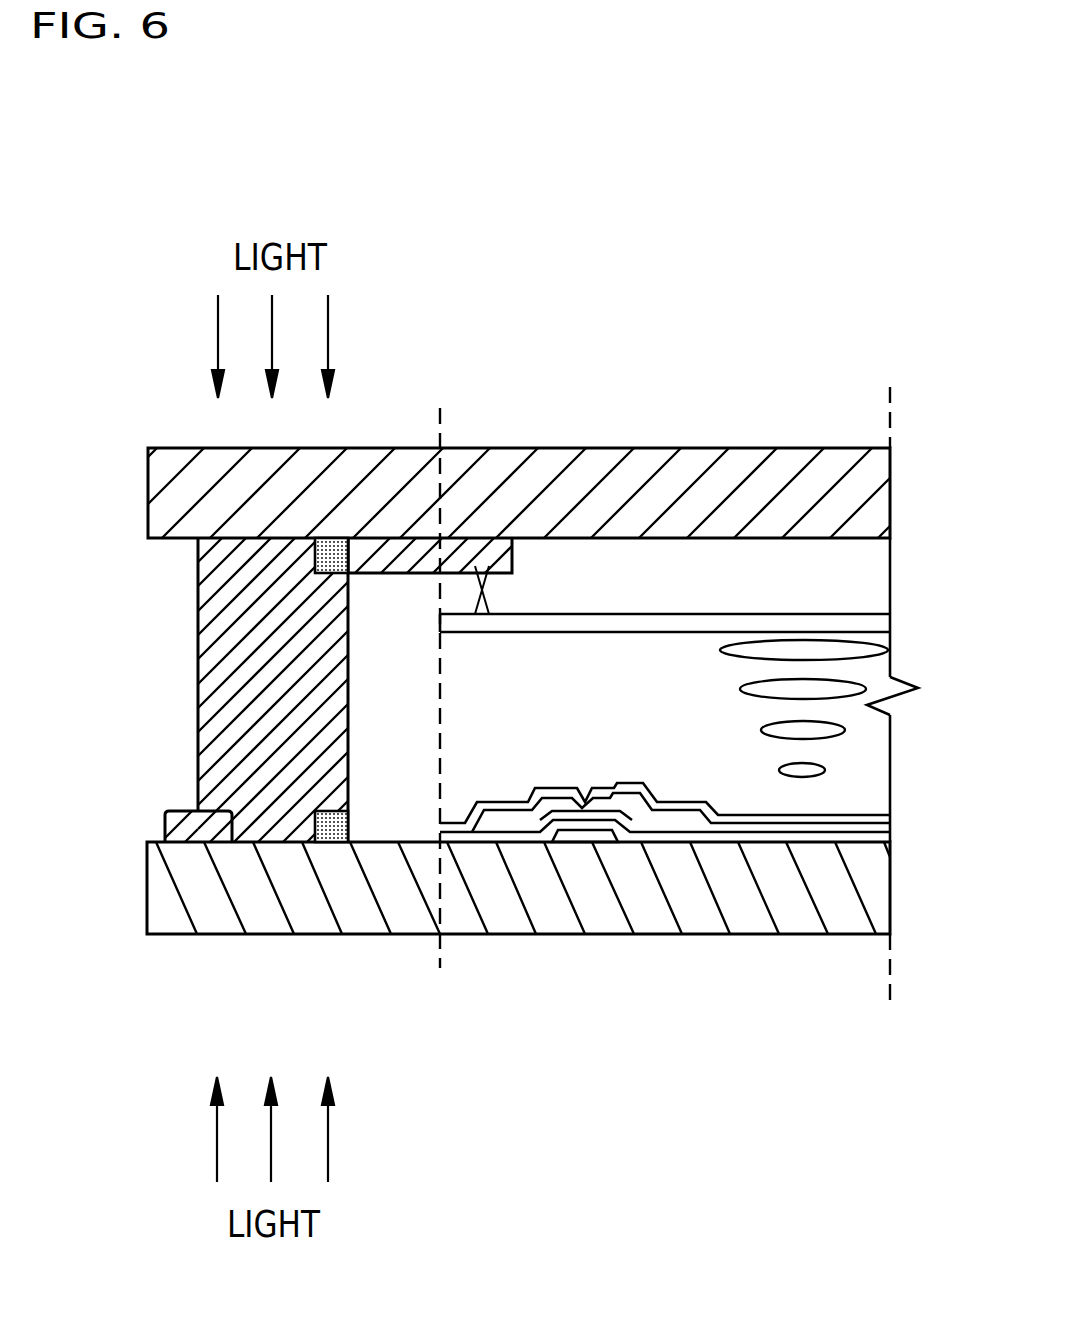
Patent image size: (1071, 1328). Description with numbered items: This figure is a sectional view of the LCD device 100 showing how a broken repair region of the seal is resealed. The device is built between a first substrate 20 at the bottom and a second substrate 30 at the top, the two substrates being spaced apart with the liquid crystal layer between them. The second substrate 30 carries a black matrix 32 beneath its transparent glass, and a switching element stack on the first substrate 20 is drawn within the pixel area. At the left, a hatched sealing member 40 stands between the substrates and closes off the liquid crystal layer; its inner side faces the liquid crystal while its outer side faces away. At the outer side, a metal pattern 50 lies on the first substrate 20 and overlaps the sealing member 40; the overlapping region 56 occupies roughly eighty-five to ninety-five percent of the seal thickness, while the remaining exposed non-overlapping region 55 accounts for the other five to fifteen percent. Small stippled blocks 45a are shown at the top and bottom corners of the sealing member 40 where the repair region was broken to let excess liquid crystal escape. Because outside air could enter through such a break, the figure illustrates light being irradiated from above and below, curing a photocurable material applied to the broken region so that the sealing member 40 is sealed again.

The LCD device 100 is at (822, 332).
The second substrate 30 is at (676, 468).
The first substrate 20 is at (650, 927).
The sealing member 40 is at (206, 602).
The adhesive layer 45a is at (337, 842).
The metal pattern 50 is at (158, 795).
The non-overlapping region 55 is at (176, 842).
The overlapping region 56 is at (253, 842).
The black matrix 32 is at (480, 590).